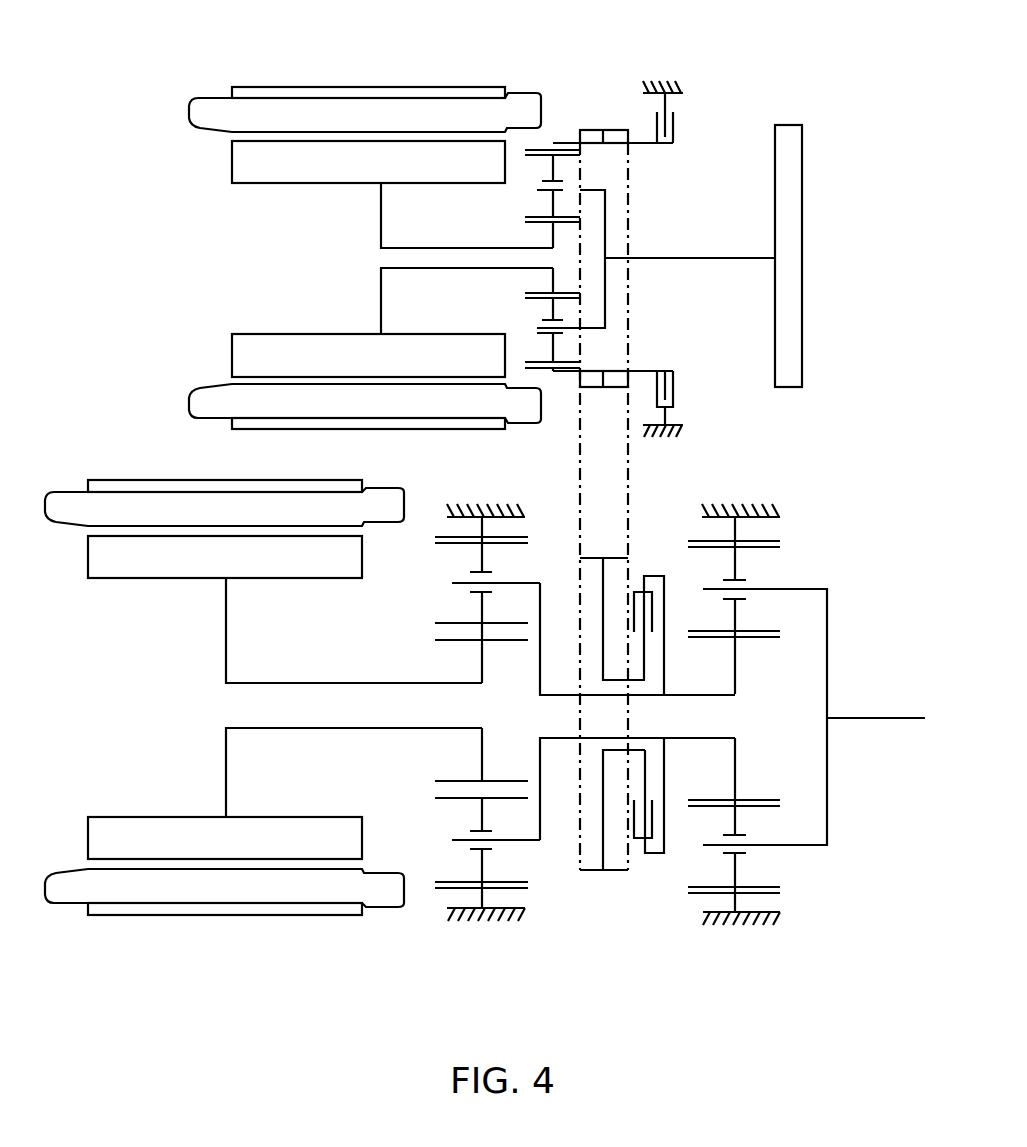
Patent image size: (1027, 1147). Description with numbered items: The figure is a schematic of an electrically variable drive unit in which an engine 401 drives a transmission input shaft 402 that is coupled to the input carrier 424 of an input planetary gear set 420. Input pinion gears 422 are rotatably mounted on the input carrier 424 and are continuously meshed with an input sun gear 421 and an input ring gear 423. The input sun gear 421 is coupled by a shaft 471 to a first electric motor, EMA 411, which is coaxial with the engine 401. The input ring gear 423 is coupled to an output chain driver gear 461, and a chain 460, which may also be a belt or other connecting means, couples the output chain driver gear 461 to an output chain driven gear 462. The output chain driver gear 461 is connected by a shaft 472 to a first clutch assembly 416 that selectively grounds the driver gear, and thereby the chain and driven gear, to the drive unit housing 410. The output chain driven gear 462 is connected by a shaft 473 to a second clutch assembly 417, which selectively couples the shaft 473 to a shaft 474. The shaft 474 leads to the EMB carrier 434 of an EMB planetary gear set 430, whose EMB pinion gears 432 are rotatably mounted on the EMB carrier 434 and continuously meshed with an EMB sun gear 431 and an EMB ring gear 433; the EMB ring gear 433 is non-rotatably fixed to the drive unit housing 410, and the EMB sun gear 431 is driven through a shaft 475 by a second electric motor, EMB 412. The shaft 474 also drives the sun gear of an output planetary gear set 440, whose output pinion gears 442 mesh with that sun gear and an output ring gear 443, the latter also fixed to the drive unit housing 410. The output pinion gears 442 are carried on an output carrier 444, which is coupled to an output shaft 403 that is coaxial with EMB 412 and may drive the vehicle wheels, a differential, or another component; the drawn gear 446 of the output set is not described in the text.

The engine 401 is at (803, 257).
The transmission input shaft 402 is at (729, 258).
The output shaft 403 is at (866, 718).
The drive unit housing 410 is at (663, 74).
The first electric motor 411 is at (204, 93).
The second electric motor 412 is at (52, 883).
The first clutch assembly 416 is at (671, 138).
The second clutch assembly 417 is at (650, 642).
The input planetary gear set 420 is at (587, 112).
The input sun gear 421 is at (525, 218).
The input pinion gears 422 is at (555, 172).
The input ring gear 423 is at (546, 150).
The input carrier 424 is at (607, 300).
The EMB planetary gear set 430 is at (538, 908).
The EMB sun gear 431 is at (457, 641).
The EMB pinion gears 432 is at (478, 571).
The EMB ring gear 433 is at (444, 536).
The EMB carrier 434 is at (542, 800).
The output planetary gear set 440 is at (792, 901).
The output pinion gears 442 is at (738, 572).
The output ring gear 443 is at (772, 541).
The output carrier 444 is at (828, 645).
The gear 446 is at (764, 640).
The chain 460 is at (628, 468).
The output chain driver gear 461 is at (621, 128).
The output chain driven gear 462 is at (604, 556).
The shaft 471 is at (439, 248).
The shaft 472 is at (640, 146).
The shaft 473 is at (613, 748).
The shaft 474 is at (730, 738).
The shaft 475 is at (303, 727).